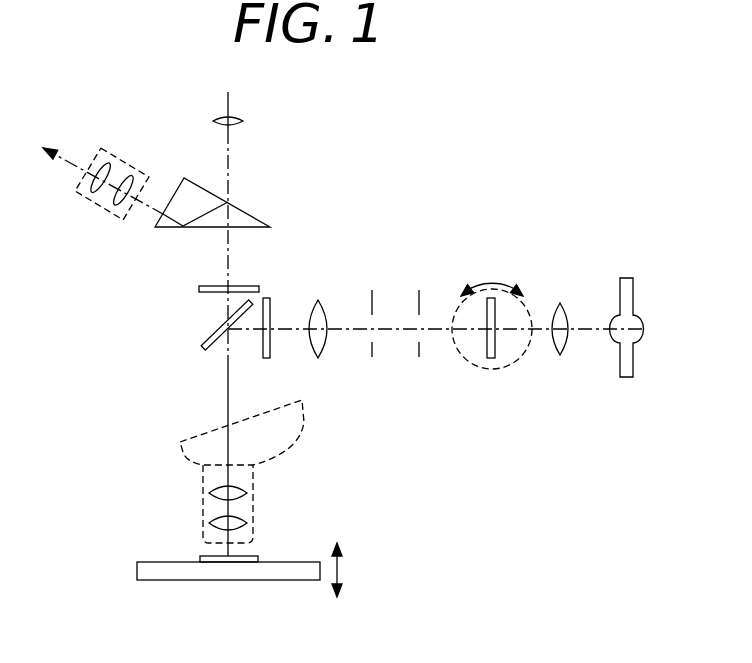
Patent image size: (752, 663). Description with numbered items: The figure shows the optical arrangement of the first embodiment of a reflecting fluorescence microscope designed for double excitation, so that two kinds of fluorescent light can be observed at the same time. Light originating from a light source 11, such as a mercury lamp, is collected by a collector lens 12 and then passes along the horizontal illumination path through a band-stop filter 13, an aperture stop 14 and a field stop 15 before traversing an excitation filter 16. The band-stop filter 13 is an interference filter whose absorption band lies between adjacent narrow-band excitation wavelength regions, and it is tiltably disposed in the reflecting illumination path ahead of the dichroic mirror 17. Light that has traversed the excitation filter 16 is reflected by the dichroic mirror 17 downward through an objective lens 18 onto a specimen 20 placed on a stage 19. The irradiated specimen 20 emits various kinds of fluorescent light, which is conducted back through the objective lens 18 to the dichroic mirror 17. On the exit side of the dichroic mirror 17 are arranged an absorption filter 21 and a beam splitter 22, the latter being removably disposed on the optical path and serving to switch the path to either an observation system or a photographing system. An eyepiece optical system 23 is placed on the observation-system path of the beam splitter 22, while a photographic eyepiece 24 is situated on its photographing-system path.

The light source 11 is at (626, 377).
The collector lens 12 is at (565, 345).
The band-stop filter 13 is at (480, 367).
The aperture stop 14 is at (419, 357).
The field stop 15 is at (372, 357).
The excitation filter 16 is at (270, 345).
The dichroic mirror 17 is at (208, 338).
The objective lens 18 is at (203, 497).
The stage 19 is at (307, 562).
The specimen 20 is at (258, 556).
The absorption filter 21 is at (259, 286).
The beam splitter 22 is at (255, 207).
The eyepiece optical system 23 is at (103, 207).
The photographic eyepiece 24 is at (243, 119).